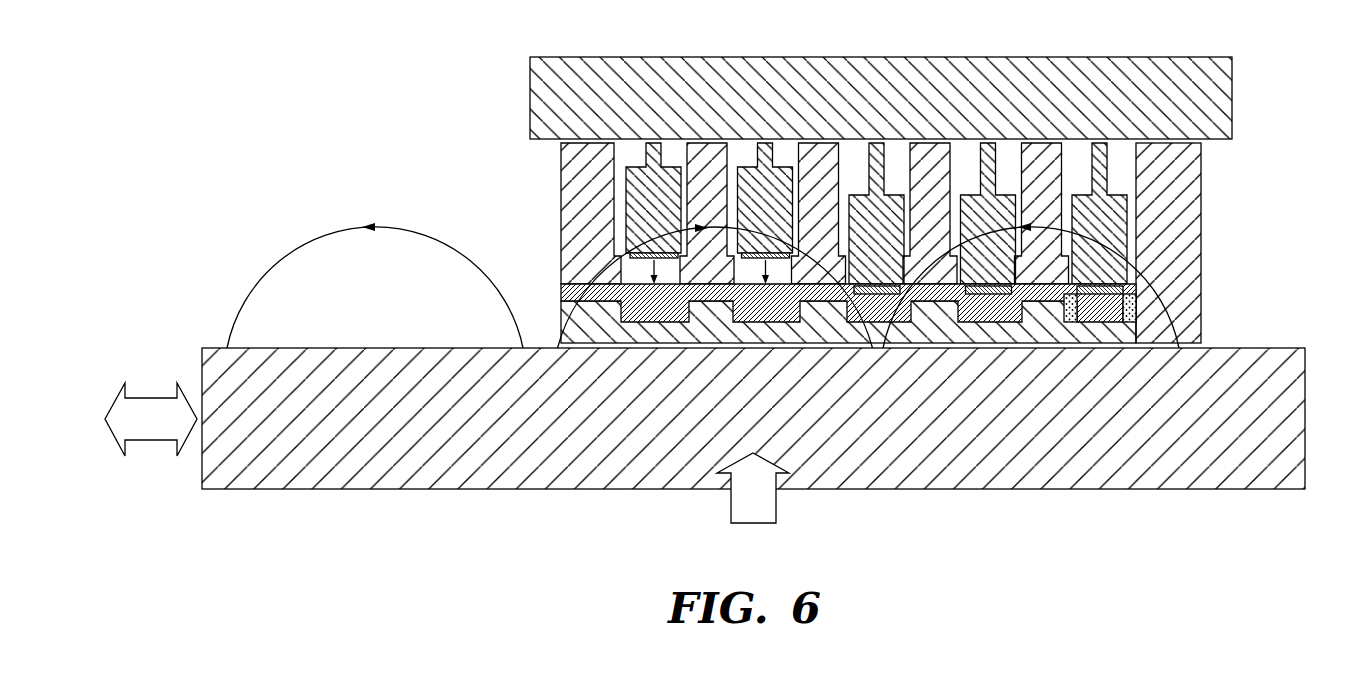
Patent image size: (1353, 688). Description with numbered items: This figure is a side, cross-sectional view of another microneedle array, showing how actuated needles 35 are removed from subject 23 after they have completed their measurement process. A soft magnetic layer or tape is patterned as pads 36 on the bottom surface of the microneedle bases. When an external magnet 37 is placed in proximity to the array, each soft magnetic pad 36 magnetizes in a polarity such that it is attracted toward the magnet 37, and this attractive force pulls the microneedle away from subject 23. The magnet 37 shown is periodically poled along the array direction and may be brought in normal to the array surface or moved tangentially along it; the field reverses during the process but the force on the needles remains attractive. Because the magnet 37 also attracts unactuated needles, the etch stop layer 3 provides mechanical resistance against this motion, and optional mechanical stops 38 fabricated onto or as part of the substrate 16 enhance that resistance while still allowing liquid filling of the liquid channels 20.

The etch stop layer 3 is at (1201, 284).
The substrate 16 is at (620, 336).
The liquid channel 20 is at (562, 292).
The subject 23 is at (1225, 102).
The actuated needles 35 is at (655, 140).
The soft magnetic pads 36 is at (770, 255).
The external magnet 37 is at (1253, 360).
The mechanical stops 38 is at (1130, 325).